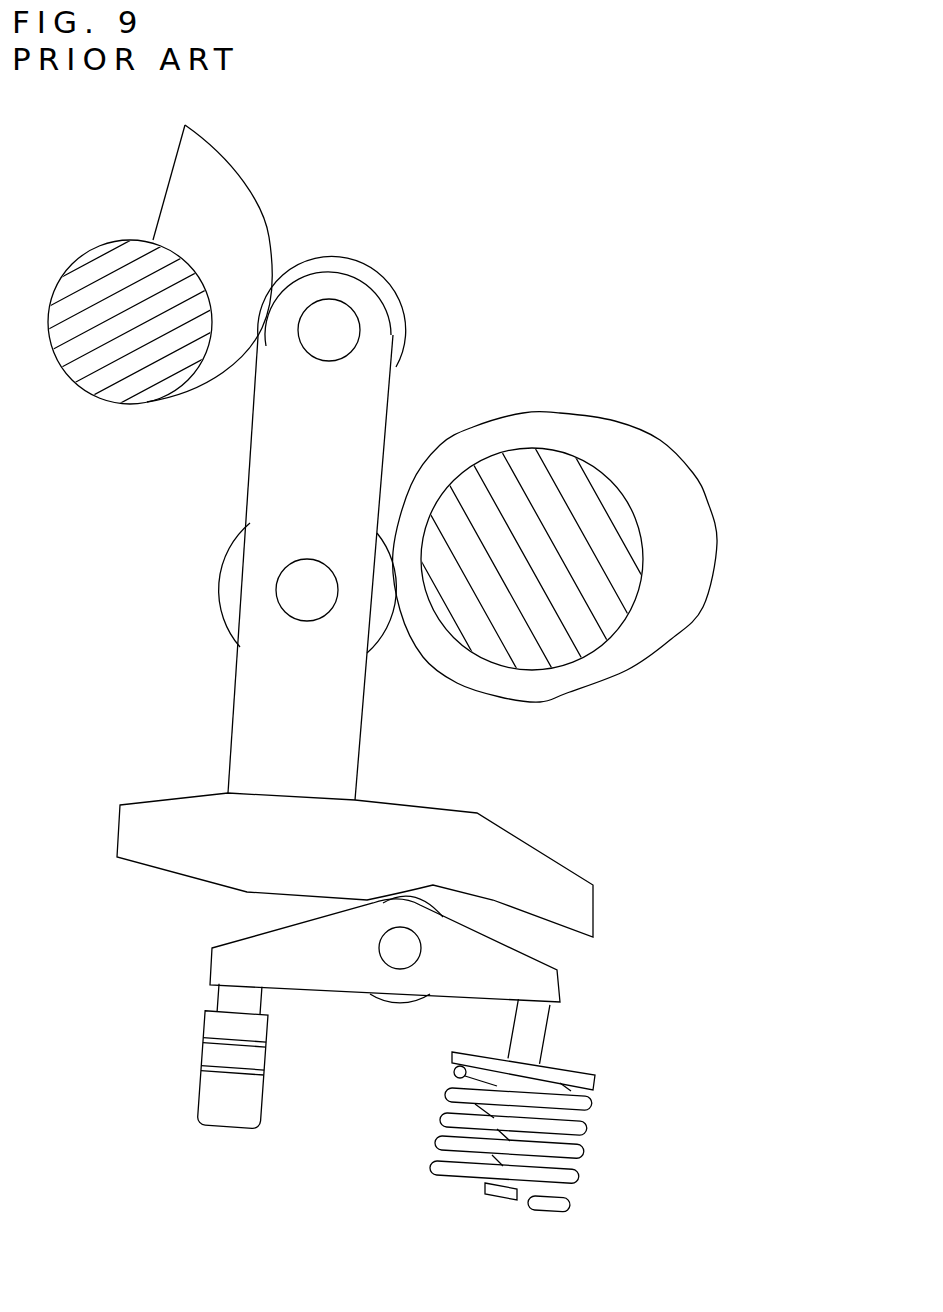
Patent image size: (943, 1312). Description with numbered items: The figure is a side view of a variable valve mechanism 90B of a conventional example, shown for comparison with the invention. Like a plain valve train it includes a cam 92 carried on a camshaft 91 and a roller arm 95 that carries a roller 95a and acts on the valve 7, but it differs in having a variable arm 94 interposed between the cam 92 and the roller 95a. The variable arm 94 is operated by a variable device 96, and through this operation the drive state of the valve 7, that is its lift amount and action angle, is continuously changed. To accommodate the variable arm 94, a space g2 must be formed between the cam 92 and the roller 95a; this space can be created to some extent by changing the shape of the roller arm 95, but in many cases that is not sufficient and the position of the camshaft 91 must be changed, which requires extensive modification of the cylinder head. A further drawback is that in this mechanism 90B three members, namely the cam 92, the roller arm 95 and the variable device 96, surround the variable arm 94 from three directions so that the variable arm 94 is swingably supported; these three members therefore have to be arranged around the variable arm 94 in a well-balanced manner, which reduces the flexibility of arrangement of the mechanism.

The variable valve mechanism 90B is at (628, 231).
The variable device 96 is at (237, 185).
The variable arm 94 is at (347, 733).
The cam 92 is at (688, 592).
The camshaft 91 is at (472, 482).
The space g2 is at (390, 889).
The roller arm 95 is at (413, 928).
The roller 95a is at (383, 897).
The valve 7 is at (537, 1025).